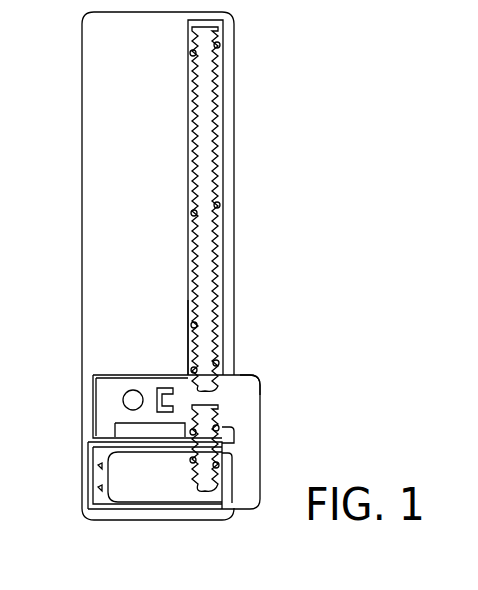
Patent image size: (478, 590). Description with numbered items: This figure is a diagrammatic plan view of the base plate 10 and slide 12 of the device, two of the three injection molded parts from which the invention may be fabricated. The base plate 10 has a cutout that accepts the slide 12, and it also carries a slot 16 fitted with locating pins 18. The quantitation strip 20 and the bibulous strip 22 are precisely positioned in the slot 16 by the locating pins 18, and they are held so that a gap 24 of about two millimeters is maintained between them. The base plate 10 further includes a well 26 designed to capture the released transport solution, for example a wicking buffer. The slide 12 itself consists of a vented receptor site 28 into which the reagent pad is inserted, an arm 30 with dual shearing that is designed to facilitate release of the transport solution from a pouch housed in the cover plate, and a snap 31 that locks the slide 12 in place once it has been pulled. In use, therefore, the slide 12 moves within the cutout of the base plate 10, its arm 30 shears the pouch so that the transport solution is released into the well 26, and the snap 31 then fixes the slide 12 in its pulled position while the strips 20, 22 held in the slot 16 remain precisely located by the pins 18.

The base plate 10 is at (82, 140).
The slide 12 is at (260, 505).
The slot 16 is at (188, 242).
The locating pins 18 is at (192, 58).
The quantitation strip 20 is at (190, 322).
The bibulous strip 22 is at (196, 490).
The gap 24 is at (250, 376).
The well 26 is at (140, 489).
The vented receptor site 28 is at (123, 400).
The arm 30 is at (88, 480).
The snap 31 is at (173, 388).